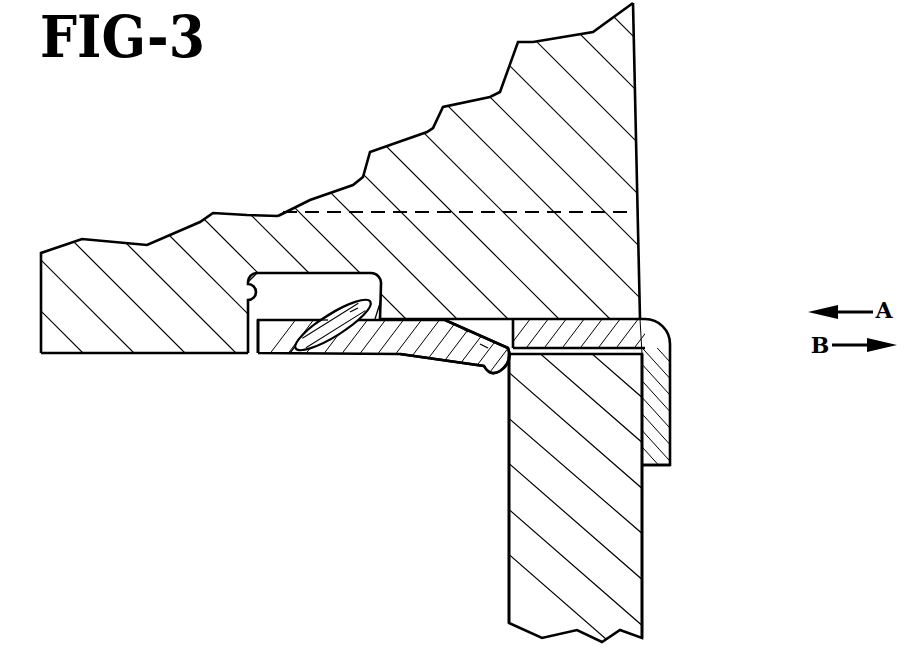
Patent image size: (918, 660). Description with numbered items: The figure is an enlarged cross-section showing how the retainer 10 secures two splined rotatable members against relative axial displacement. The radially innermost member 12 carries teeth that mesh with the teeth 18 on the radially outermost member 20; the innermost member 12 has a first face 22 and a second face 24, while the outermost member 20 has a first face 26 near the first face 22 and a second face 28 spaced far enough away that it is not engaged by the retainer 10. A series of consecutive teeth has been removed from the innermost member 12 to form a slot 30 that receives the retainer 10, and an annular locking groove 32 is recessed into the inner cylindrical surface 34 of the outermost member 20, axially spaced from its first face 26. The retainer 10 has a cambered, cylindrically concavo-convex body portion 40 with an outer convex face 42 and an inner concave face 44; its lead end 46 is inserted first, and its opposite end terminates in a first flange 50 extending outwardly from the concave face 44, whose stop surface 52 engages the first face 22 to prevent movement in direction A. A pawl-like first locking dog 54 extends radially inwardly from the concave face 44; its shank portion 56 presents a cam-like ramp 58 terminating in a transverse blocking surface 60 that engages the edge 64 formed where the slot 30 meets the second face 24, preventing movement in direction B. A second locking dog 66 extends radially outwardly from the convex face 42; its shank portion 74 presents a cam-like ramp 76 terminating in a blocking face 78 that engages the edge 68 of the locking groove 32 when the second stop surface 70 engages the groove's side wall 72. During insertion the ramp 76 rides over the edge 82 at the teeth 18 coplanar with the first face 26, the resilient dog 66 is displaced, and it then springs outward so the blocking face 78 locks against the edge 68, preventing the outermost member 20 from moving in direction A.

The retainer 10 is at (712, 392).
The radially innermost member 12 is at (630, 598).
The teeth 18 is at (602, 232).
The radially outermost member 20 is at (598, 67).
The first face 22 is at (647, 561).
The second face 24 is at (508, 588).
The first face 26 is at (640, 152).
The second face 28 is at (41, 277).
The slot 30 is at (595, 355).
The annular locking groove 32 is at (323, 284).
The inner cylindrical surface 34 is at (115, 355).
The body portion 40 is at (656, 332).
The outer convex face 42 is at (588, 318).
The inner concave face 44 is at (567, 355).
The lead end 46 is at (262, 352).
The first flange 50 is at (657, 432).
The stop surface 52 is at (645, 470).
The first locking dog 54 is at (442, 350).
The shank portion 56 is at (467, 360).
The cam-like ramp 58 is at (498, 375).
The blocking surface 60 is at (518, 362).
The edge 64 is at (484, 366).
The second locking dog 66 is at (352, 314).
The edge 68 is at (362, 335).
The second stop surface 70 is at (258, 337).
The side wall 72 is at (248, 278).
The shank portion 74 is at (302, 342).
The cam-like ramp 76 is at (323, 318).
The blocking face 78 is at (380, 318).
The edge 82 is at (643, 317).